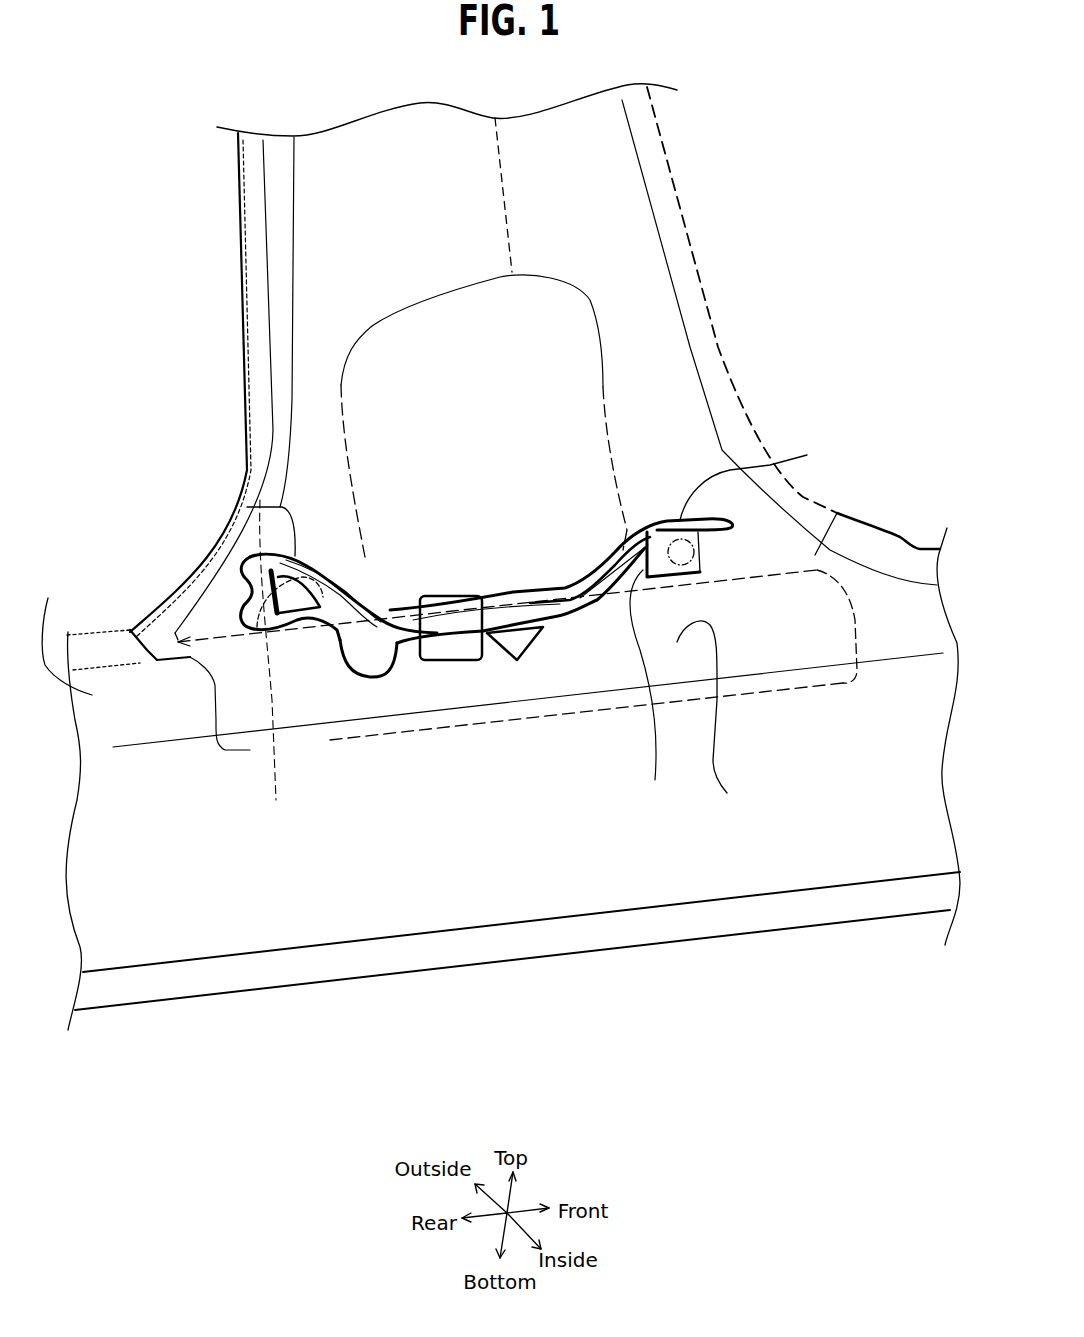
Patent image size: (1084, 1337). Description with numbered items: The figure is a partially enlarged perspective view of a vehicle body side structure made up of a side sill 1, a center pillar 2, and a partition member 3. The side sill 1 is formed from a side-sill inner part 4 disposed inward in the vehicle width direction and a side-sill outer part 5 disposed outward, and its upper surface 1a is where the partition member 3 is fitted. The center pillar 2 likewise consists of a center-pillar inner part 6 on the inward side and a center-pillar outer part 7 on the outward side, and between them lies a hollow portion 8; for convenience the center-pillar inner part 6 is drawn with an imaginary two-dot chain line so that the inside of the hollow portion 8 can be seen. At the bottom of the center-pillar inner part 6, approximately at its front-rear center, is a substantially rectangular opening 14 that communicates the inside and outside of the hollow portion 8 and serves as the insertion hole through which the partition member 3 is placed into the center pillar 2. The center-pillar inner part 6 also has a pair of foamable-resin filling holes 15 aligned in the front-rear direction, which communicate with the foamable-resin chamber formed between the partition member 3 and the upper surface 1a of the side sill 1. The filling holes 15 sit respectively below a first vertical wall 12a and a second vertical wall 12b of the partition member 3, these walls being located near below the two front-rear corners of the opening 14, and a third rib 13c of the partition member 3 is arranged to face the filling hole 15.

The side sill 1 is at (43, 585).
The upper surface of the side sill 1a is at (709, 713).
The center pillar 2 is at (171, 132).
The partition member 3 is at (507, 613).
The side-sill inner part 4 is at (65, 633).
The side-sill outer part 5 is at (112, 650).
The center-pillar inner part 6 is at (245, 248).
The center-pillar outer part 7 is at (240, 185).
The hollow portion 8 is at (250, 647).
The first vertical wall 12a is at (733, 470).
The second vertical wall 12b is at (247, 507).
The third rib 13c is at (272, 640).
The opening 14 is at (603, 387).
The foamable-resin filling holes 15 is at (287, 635).